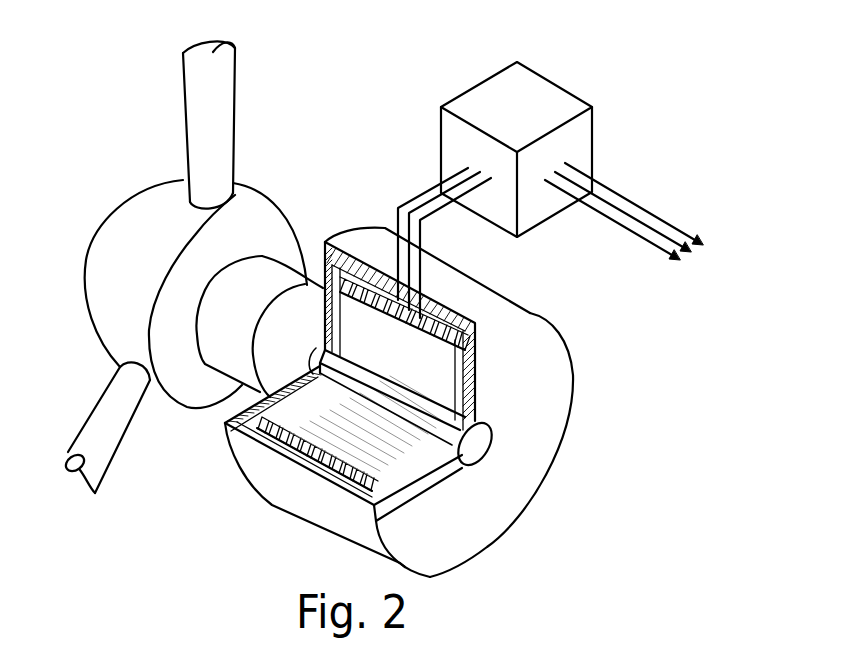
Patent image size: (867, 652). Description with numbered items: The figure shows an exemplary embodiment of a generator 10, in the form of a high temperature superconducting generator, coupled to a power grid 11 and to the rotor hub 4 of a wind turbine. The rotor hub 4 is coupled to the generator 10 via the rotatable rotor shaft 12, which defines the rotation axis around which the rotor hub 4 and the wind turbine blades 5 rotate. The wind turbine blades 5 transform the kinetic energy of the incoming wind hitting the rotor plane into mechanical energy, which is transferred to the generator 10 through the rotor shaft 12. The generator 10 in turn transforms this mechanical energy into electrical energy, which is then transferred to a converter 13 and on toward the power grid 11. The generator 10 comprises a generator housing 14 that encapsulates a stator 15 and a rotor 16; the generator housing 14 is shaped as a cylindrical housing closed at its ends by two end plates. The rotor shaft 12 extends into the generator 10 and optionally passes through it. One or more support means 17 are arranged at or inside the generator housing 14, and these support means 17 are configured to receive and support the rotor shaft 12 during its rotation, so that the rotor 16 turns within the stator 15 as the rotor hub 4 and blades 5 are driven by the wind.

The rotor hub 4 is at (120, 237).
The wind turbine blades 5 is at (222, 123).
The generator 10 is at (575, 478).
The power grid 11 is at (682, 233).
The rotor shaft 12 is at (466, 440).
The converter 13 is at (525, 90).
The generator housing 14 is at (297, 475).
The stator 15 is at (275, 427).
The rotor 16 is at (396, 455).
The support means 17 is at (483, 412).